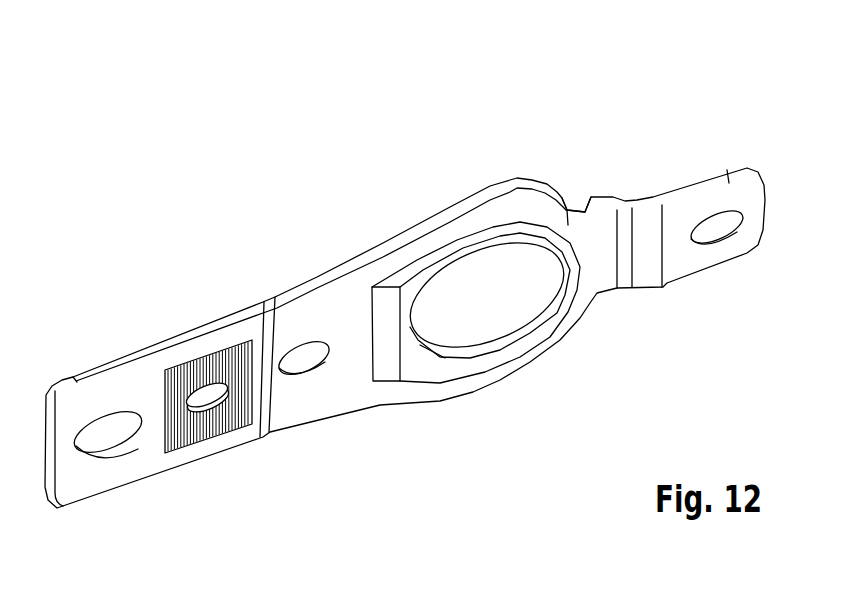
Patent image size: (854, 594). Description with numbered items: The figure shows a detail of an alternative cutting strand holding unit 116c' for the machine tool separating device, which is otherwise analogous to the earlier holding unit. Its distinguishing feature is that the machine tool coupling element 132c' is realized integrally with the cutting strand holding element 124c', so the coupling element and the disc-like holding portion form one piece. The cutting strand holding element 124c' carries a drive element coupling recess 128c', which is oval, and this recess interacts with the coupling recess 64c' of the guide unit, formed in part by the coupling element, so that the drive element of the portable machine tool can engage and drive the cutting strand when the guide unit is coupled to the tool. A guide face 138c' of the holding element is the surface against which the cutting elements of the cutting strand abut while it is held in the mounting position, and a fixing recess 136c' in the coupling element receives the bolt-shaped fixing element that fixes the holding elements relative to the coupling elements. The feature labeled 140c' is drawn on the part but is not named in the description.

The cutting strand holding unit 116c' is at (405, 261).
The machine tool coupling element 132c' is at (710, 184).
The fixing recess 136c' is at (321, 402).
The cutting strand holding element 124c' is at (511, 307).
The guide face 138c' is at (476, 251).
The recess / notch 140c' is at (597, 165).
The coupling recess 64c' is at (485, 333).
The drive element coupling recess 128c' is at (510, 389).